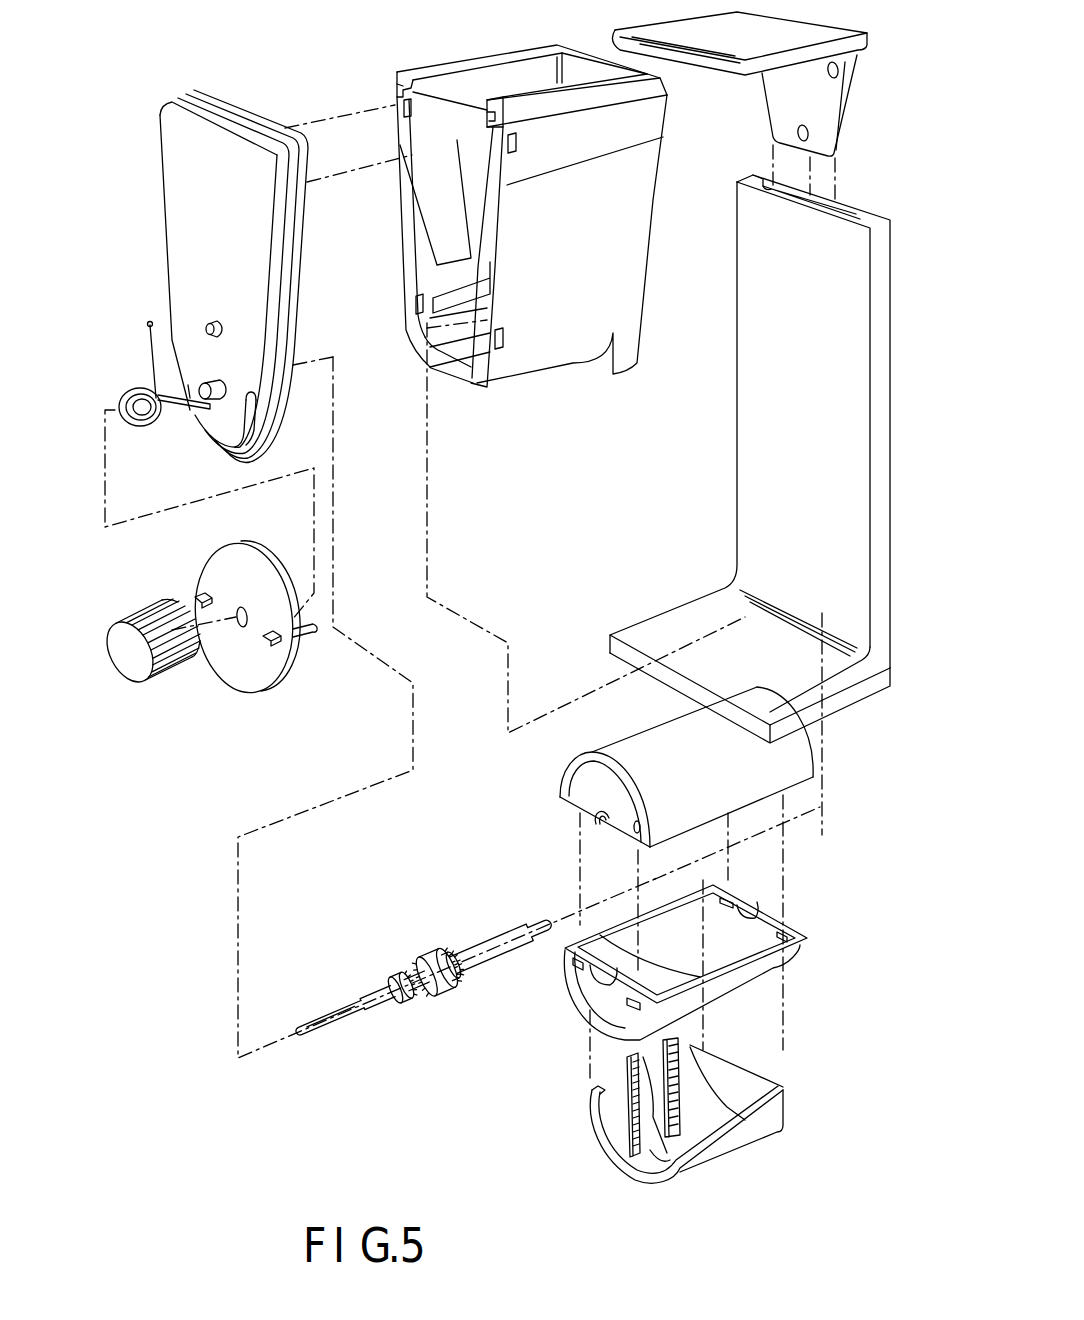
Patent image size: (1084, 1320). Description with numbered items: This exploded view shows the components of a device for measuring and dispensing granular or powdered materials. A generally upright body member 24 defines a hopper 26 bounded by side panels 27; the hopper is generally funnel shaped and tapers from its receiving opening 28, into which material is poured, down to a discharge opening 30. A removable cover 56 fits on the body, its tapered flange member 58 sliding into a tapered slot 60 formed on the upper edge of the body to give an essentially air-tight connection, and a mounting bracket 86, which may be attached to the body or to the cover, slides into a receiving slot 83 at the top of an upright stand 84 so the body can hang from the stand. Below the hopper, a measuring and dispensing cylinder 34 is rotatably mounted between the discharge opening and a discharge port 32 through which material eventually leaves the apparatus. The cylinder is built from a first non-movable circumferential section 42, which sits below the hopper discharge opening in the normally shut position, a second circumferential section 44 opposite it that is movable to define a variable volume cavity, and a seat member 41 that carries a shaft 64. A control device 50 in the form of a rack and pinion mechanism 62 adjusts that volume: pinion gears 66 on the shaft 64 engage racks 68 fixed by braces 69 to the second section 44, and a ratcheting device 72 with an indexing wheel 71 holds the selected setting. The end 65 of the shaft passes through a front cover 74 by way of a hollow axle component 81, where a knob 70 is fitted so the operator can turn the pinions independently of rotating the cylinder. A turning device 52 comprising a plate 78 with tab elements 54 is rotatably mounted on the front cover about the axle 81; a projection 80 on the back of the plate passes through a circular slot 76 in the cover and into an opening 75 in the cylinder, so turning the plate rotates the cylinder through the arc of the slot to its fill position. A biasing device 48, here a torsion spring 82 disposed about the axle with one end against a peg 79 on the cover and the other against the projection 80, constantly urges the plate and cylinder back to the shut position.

The body member 24 is at (600, 238).
The hopper 26 is at (478, 205).
The side panels 27 is at (455, 233).
The receiving opening 28 is at (420, 153).
The discharge opening 30 is at (473, 257).
The discharge port 32 is at (452, 373).
The measuring and dispensing cylinder 34 is at (547, 835).
The seat member 41 is at (808, 948).
The first non-movable circumferential section 42 is at (808, 760).
The second circumferential section 44 is at (720, 1155).
The biasing device 48 is at (96, 428).
The control device 50 is at (440, 1040).
The turning device 52 is at (212, 690).
The tab elements 54 is at (263, 643).
The cover 56 is at (773, 20).
The tapered flange member 58 is at (640, 53).
The tapered slot 60 is at (394, 79).
The rack and pinion mechanism 62 is at (637, 1162).
The shaft 64 is at (482, 958).
The shaft end 65 is at (305, 1023).
The pinion gear 66 is at (402, 1003).
The racks 68 is at (623, 1063).
The braces 69 is at (670, 1140).
The knob 70 is at (130, 670).
The indexing wheel 71 is at (427, 952).
The ratcheting device 72 is at (386, 930).
The front cover 74 is at (173, 244).
The opening 75 is at (647, 823).
The circular slot 76 is at (227, 440).
The plate 78 is at (210, 568).
The peg 79 is at (215, 322).
The projection 80 is at (307, 630).
The hollow axle component 81 is at (222, 380).
The spring 82 is at (137, 384).
The slot 83 is at (834, 206).
The stand 84 is at (752, 408).
The mounting bracket 86 is at (837, 112).